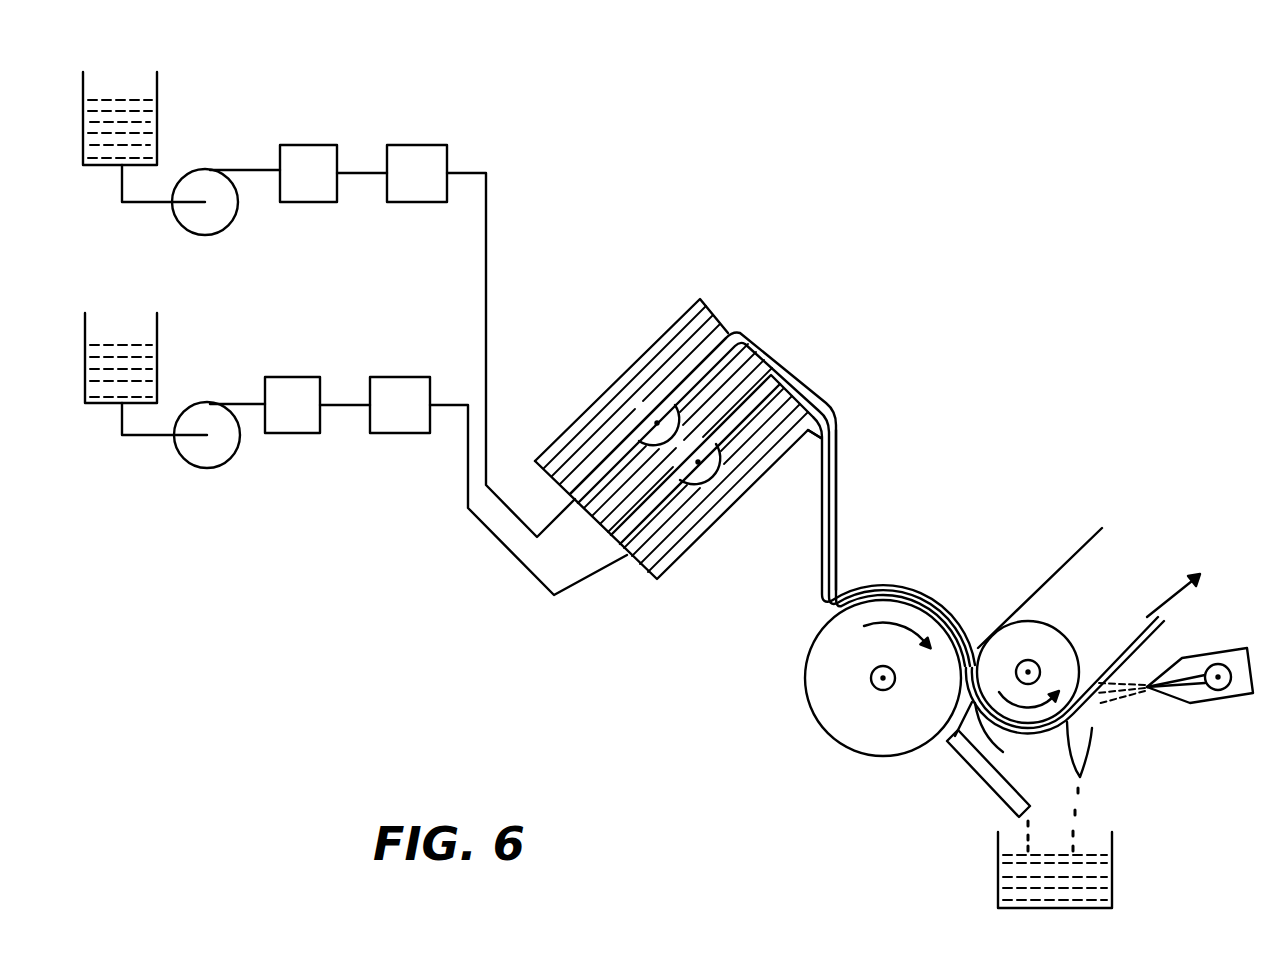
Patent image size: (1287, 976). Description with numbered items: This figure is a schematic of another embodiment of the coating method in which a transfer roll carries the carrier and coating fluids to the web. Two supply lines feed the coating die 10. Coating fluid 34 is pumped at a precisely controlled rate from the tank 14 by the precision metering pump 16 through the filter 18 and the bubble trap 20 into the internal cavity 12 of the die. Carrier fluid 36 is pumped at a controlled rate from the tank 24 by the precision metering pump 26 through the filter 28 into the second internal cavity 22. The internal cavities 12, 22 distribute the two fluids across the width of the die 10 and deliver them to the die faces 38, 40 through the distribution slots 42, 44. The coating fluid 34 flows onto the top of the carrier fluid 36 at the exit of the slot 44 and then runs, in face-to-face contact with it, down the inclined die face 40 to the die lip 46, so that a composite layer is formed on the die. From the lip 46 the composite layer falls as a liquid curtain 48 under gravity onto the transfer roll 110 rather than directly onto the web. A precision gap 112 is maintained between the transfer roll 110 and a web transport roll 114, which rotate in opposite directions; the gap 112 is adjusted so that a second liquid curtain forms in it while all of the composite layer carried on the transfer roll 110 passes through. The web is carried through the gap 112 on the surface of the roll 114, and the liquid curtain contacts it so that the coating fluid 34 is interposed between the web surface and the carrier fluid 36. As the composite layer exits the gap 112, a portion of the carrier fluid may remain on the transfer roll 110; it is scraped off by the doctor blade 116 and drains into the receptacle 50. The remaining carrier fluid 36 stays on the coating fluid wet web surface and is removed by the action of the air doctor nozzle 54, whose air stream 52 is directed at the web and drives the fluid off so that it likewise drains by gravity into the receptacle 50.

The coating die 10 is at (624, 563).
The internal cavity 12 is at (620, 378).
The tank 14 is at (158, 113).
The precision metering pump 16 is at (222, 225).
The filter 18 is at (308, 148).
The bubble trap 20 is at (427, 147).
The internal cavity 22 is at (718, 510).
The tank 24 is at (160, 350).
The precision metering pump 26 is at (212, 458).
The filter 28 is at (283, 387).
The coating fluid 34 is at (123, 103).
The carrier fluid 36 is at (122, 345).
The die face 38 is at (758, 348).
The die face 40 is at (798, 397).
The distribution slot 42 is at (687, 382).
The distribution slot 44 is at (727, 413).
The die lip 46 is at (817, 440).
The curtain 48 is at (840, 471).
The receptacle 50 is at (1112, 867).
The spray 52 is at (1122, 695).
The air doctor nozzle 54 is at (1237, 700).
The transfer roll 110 is at (812, 692).
The precision gap 112 is at (1003, 752).
The web transport roll 114 is at (1060, 645).
The doctor blade 116 is at (953, 760).